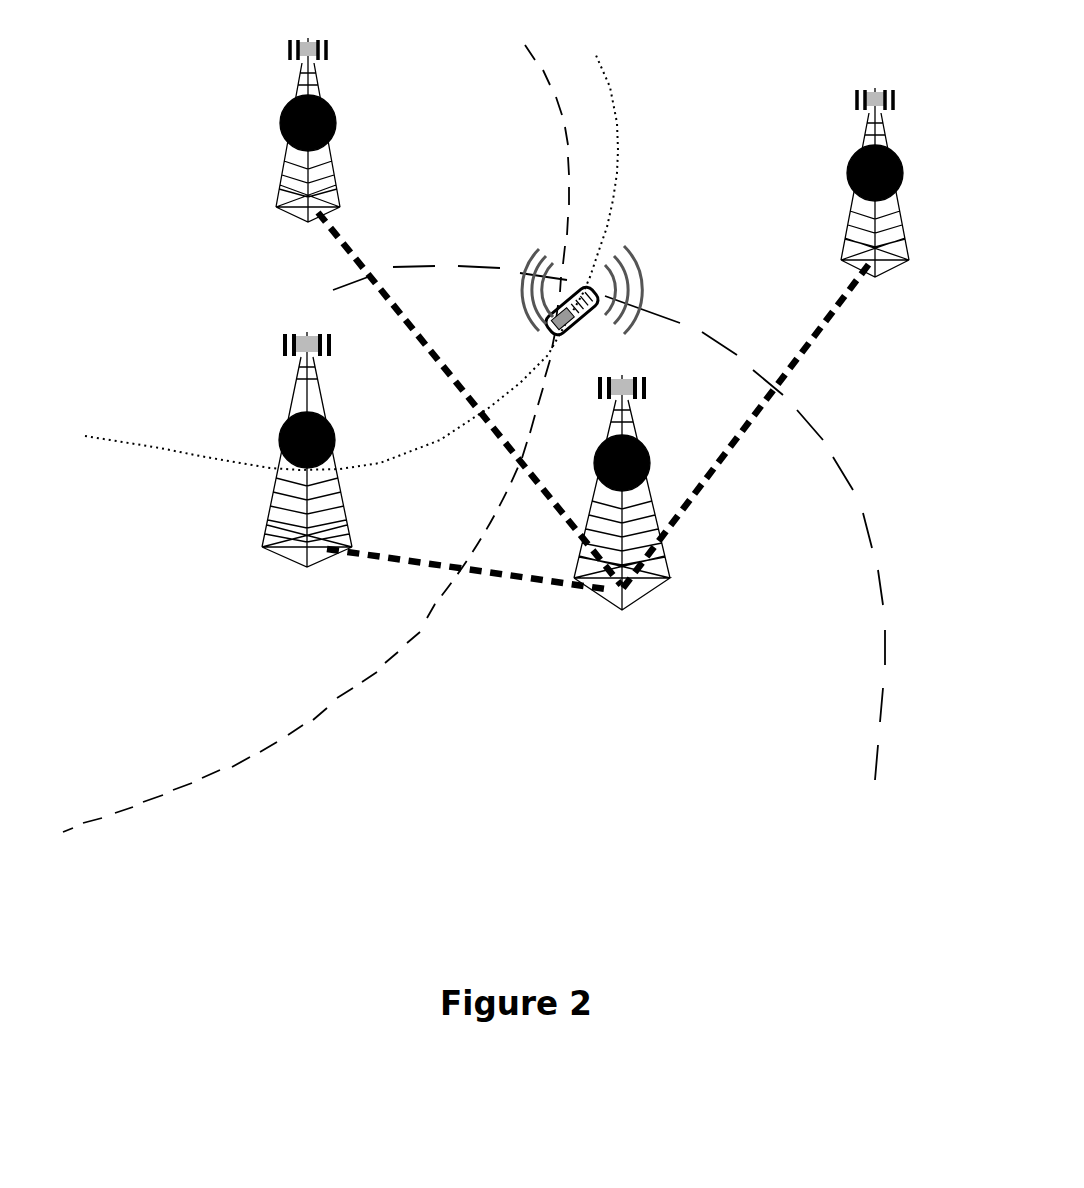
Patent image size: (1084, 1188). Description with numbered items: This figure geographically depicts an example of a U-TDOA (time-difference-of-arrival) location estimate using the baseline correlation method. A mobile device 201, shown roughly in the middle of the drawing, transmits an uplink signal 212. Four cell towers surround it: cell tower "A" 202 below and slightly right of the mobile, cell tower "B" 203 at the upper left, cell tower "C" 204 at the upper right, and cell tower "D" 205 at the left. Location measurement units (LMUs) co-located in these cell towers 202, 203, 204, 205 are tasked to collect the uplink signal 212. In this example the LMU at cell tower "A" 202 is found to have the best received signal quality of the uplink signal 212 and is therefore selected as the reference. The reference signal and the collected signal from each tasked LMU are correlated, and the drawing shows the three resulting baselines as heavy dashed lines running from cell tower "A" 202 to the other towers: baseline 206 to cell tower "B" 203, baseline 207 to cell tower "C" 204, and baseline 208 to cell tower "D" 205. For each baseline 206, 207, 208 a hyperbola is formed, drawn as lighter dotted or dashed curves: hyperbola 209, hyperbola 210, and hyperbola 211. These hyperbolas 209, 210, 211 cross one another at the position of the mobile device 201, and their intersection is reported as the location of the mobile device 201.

The mobile device 201 is at (582, 305).
The cell tower "A" 202 is at (622, 513).
The cell tower "B" 203 is at (285, 130).
The cell tower "C" 204 is at (898, 180).
The cell tower "D" 205 is at (286, 449).
The baseline 206 is at (468, 397).
The baseline 207 is at (755, 426).
The baseline 208 is at (469, 572).
The hyperbola 209 is at (351, 271).
The hyperbola 210 is at (609, 523).
The hyperbola 211 is at (316, 438).
The uplink signal 212 is at (550, 247).